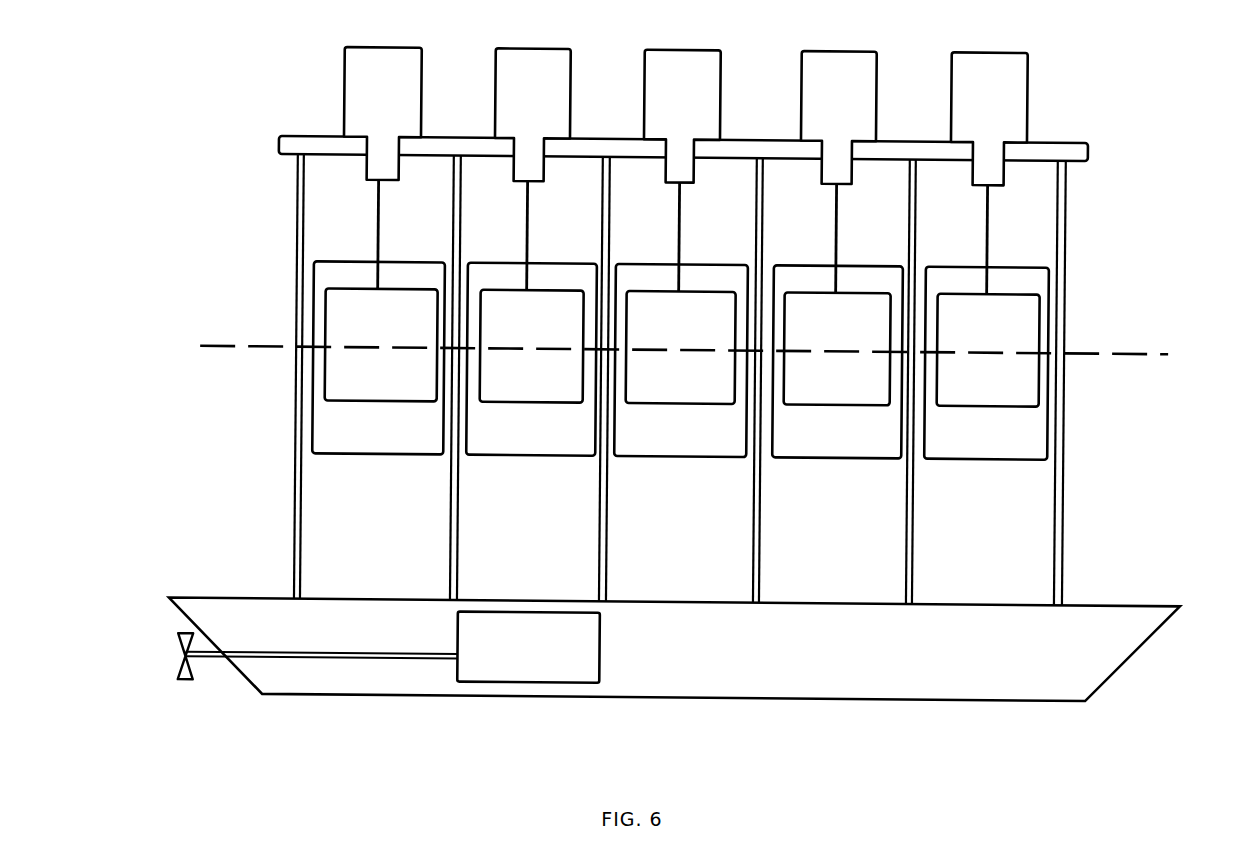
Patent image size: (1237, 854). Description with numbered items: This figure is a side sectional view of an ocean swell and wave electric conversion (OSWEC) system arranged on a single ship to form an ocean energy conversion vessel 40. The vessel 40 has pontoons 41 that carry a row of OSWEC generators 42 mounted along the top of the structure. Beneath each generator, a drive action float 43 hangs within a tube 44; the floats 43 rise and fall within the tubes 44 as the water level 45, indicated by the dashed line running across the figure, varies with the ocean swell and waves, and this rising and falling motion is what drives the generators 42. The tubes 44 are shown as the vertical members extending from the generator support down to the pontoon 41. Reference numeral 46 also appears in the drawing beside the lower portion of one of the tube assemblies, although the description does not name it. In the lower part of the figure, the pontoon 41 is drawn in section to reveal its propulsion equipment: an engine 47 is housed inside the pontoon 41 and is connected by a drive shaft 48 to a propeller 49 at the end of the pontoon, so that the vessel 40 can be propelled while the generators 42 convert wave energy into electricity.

The ocean energy conversion vessel 40 is at (1091, 150).
The pontoon 41 is at (1078, 604).
The OSWEC generator 42 is at (1029, 90).
The drive action float 43 is at (1013, 292).
The tube 44 is at (1051, 388).
The water level 45 is at (1001, 348).
The outer frame 46 is at (1023, 430).
The engine 47 is at (545, 685).
The drive shaft 48 is at (352, 664).
The propeller 49 is at (200, 687).